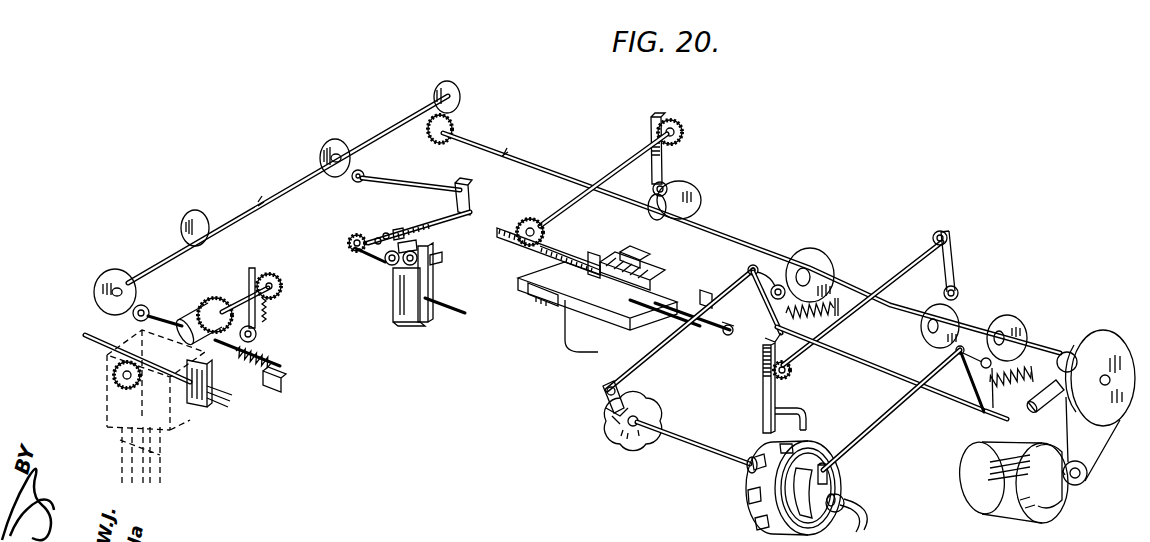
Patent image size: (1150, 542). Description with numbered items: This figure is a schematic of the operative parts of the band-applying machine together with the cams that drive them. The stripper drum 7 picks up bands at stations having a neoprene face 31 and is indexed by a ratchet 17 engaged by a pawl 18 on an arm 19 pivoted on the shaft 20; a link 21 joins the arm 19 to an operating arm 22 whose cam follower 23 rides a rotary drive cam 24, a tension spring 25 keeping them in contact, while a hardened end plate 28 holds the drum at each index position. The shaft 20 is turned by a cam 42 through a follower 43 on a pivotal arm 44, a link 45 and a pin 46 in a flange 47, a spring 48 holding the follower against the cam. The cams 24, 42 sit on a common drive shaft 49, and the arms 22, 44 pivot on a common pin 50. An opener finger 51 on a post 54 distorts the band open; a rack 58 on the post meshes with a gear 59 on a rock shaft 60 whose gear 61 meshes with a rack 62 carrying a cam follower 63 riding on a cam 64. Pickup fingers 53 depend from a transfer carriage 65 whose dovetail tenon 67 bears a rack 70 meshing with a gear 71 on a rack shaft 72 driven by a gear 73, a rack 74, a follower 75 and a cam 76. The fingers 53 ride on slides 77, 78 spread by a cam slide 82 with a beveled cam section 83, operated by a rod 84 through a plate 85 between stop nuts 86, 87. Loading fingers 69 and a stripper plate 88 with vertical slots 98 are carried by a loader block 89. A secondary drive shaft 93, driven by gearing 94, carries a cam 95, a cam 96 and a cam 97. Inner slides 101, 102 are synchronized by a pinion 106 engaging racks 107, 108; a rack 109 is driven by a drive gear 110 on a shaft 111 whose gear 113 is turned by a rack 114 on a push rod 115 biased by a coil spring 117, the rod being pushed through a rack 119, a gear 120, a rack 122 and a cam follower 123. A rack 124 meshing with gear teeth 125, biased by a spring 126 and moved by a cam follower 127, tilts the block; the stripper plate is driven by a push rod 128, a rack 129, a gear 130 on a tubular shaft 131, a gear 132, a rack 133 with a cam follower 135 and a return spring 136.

The stripper drum 7 is at (752, 507).
The ratchet 17 is at (622, 446).
The pawl 18 is at (612, 414).
The arm 19 is at (603, 392).
The shaft 20 is at (866, 520).
The link 21 is at (648, 363).
The operating arm 22 is at (762, 300).
The cam follower 23 is at (752, 266).
The rotary drive cam 24 is at (815, 250).
The tension spring 25 is at (841, 302).
The end plate 28 is at (812, 468).
The face 31 is at (746, 470).
The cam 42 is at (1025, 324).
The follower 43 is at (982, 367).
The pivotal arm 44 is at (976, 400).
The link 45 is at (880, 420).
The pin 46 is at (830, 472).
The flange 47 is at (846, 498).
The spring 48 is at (1018, 387).
The common drive shaft 49 is at (764, 246).
The common pin 50 is at (904, 376).
The opener finger 51 is at (808, 414).
The pickup and transfer fingers 53 is at (576, 349).
The post 54 is at (762, 400).
The rack 58 is at (763, 368).
The gear 59 is at (792, 371).
The rock shaft 60 is at (868, 307).
The gear 61 is at (939, 230).
The rack 62 is at (956, 255).
The cam follower 63 is at (959, 290).
The cam 64 is at (960, 316).
The transfer carriage 65 is at (672, 280).
The dovetail tenon 67 is at (530, 262).
The loading fingers 69 is at (210, 399).
The rack 70 is at (546, 247).
The gear 71 is at (543, 216).
The rack shaft 72 is at (606, 187).
The gear 73 is at (684, 127).
The rack 74 is at (664, 160).
The cam follower 75 is at (674, 183).
The cam 76 is at (702, 203).
The slide 77 is at (546, 306).
The slide 78 is at (636, 256).
The cam slide 82 is at (650, 270).
The beveled cam section 83 is at (604, 262).
The rod 84 is at (702, 322).
The plate 85 is at (696, 306).
The stop nut 86 is at (662, 318).
The stop nut 87 is at (727, 337).
The stripper plate 88 is at (210, 409).
The loader block 89 is at (181, 418).
The secondary drive shaft 93 is at (293, 182).
The gearing 94 is at (461, 109).
The cam 95 is at (338, 140).
The cam 96 is at (190, 211).
The cam 97 is at (112, 272).
The vertical slots 98 is at (209, 386).
The lower inner slide 101 is at (406, 320).
The upper inner slide 102 is at (430, 280).
The transverse pinion 106 is at (432, 262).
The rack 107 is at (406, 267).
The rack 108 is at (420, 250).
The rack 109 is at (393, 236).
The drive gear 110 is at (388, 266).
The shaft 111 is at (366, 258).
The gear 113 is at (350, 238).
The rack 114 is at (377, 237).
The push rod 115 is at (385, 233).
The coil spring 117 is at (419, 220).
The rack 119 is at (441, 214).
The gear 120 is at (471, 210).
The rack 122 is at (417, 188).
The cam follower 123 is at (352, 182).
The rack 124 is at (252, 352).
The gear teeth 125 is at (207, 301).
The spring 126 is at (286, 372).
The cam follower 127 is at (147, 305).
The push rod 128 is at (86, 334).
The rack 129 is at (100, 350).
The gear 130 is at (114, 379).
The tubular shaft 131 is at (241, 299).
The gear 132 is at (281, 286).
The rack 133 is at (253, 267).
The cam follower 135 is at (257, 334).
The spring 136 is at (270, 307).